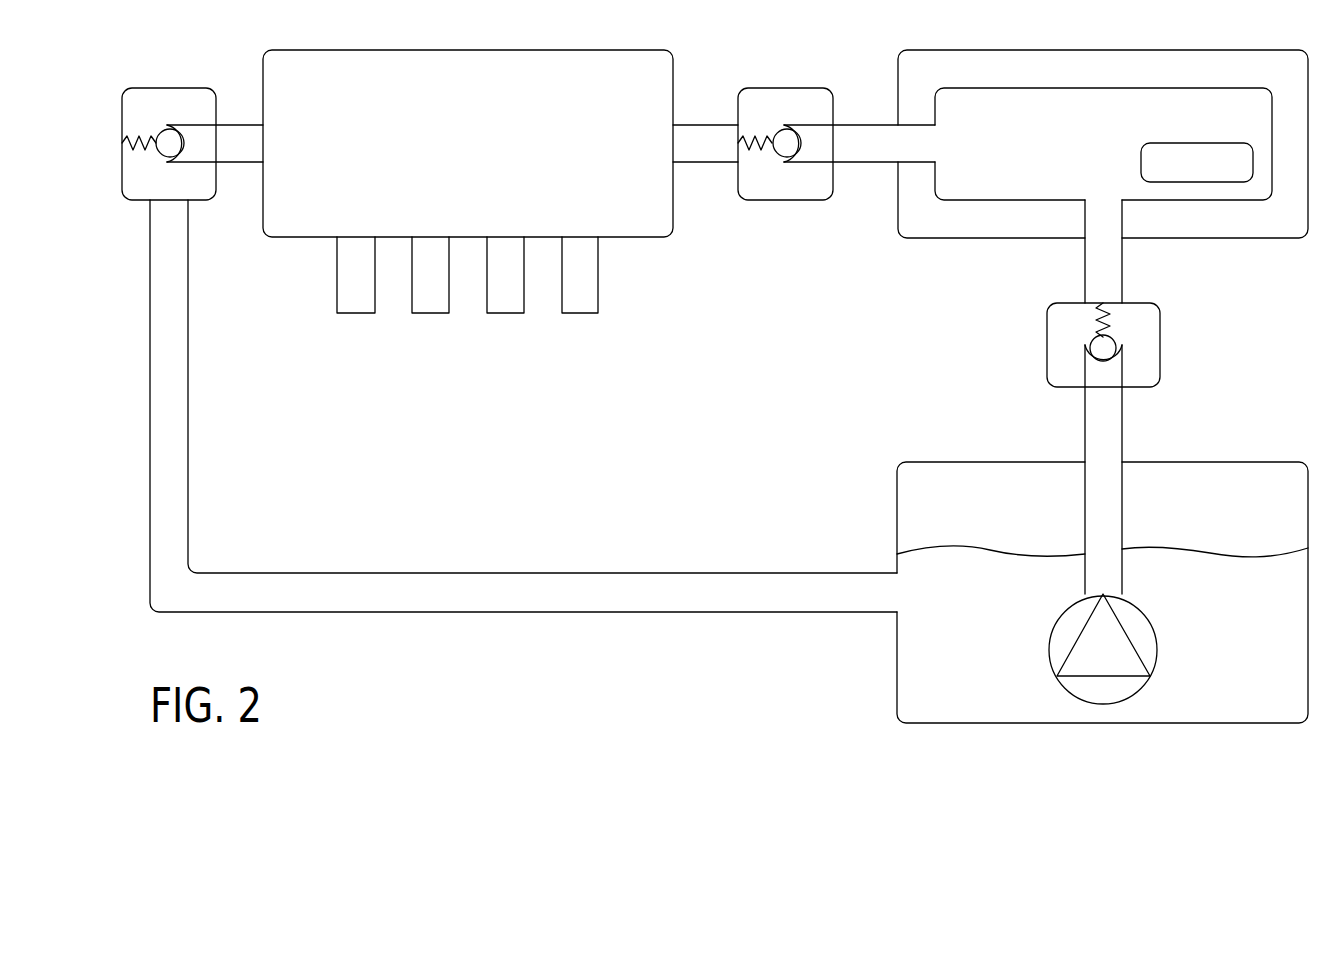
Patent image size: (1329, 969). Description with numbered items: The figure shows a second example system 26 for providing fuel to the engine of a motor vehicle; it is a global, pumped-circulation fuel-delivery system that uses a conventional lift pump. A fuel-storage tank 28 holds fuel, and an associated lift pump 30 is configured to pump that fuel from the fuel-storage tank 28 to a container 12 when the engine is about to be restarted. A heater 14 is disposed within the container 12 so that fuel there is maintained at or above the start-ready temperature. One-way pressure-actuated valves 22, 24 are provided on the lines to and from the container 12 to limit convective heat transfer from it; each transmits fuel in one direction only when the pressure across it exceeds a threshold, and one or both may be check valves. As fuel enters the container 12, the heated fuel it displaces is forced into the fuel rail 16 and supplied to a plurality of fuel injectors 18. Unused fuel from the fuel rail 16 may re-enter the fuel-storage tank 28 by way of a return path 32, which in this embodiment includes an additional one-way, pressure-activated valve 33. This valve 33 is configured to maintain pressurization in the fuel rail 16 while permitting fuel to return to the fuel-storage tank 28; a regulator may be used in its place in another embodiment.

The container 12 is at (972, 247).
The heater 14 is at (1197, 162).
The fuel rail 16 is at (468, 143).
The fuel injectors 18 is at (637, 273).
The one-way pressure-actuated valve 22 is at (787, 88).
The one-way pressure-actuated valve 24 is at (1160, 345).
The system 26 is at (637, 668).
The fuel-storage tank 28 is at (973, 460).
The lift pump 30 is at (1157, 648).
The return path 32 is at (188, 370).
The one-way pressure-activated valve 33 is at (172, 88).